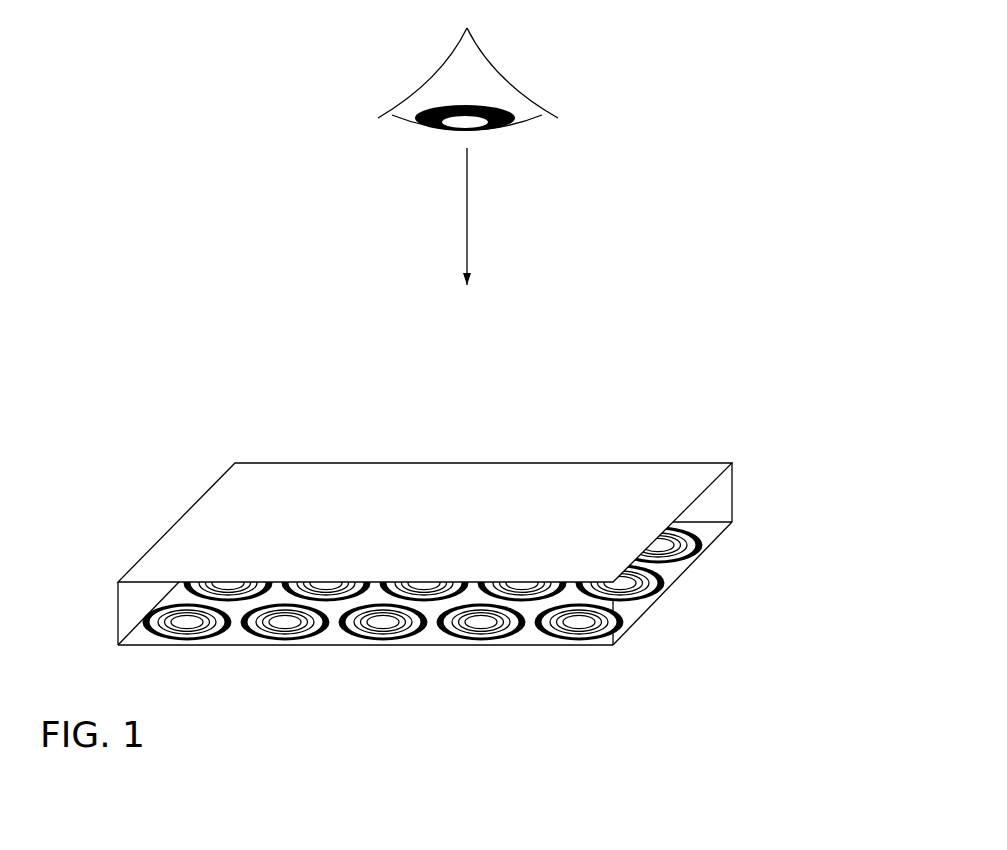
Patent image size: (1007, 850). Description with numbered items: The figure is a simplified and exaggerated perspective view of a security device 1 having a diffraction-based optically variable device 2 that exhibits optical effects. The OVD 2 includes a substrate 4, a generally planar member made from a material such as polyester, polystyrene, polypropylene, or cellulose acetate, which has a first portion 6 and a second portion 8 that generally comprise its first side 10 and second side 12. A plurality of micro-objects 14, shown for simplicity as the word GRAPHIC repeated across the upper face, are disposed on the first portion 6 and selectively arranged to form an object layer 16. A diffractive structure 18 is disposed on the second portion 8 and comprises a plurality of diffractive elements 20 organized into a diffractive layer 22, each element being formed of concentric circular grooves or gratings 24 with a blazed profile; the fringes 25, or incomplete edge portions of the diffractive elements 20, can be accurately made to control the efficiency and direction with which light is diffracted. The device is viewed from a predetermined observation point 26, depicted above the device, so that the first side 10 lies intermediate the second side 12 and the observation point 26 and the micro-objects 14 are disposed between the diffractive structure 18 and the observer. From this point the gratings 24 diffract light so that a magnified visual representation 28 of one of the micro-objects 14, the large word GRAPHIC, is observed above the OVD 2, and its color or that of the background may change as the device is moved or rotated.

The security device 1 is at (418, 576).
The optically variable device 2 is at (418, 565).
The substrate 4 is at (613, 645).
The first portion 6 is at (457, 493).
The second portion 8 is at (396, 616).
The first side 10 is at (135, 593).
The second side 12 is at (135, 638).
The micro-object 14 is at (477, 475).
The object layer 16 is at (717, 458).
The diffractive structure 18 is at (440, 639).
The diffractive element 20 is at (353, 638).
The diffractive layer 22 is at (542, 647).
The grating 24 is at (162, 640).
The fringe 25 is at (630, 611).
The observation point 26 is at (512, 82).
The magnified visual representation 28 is at (620, 295).